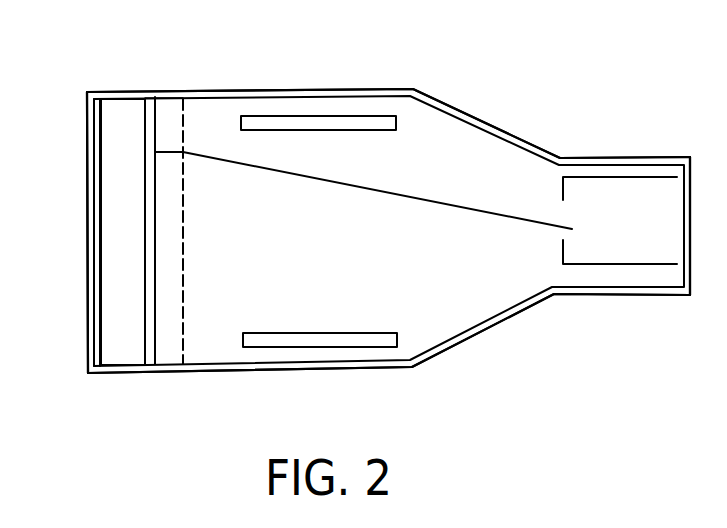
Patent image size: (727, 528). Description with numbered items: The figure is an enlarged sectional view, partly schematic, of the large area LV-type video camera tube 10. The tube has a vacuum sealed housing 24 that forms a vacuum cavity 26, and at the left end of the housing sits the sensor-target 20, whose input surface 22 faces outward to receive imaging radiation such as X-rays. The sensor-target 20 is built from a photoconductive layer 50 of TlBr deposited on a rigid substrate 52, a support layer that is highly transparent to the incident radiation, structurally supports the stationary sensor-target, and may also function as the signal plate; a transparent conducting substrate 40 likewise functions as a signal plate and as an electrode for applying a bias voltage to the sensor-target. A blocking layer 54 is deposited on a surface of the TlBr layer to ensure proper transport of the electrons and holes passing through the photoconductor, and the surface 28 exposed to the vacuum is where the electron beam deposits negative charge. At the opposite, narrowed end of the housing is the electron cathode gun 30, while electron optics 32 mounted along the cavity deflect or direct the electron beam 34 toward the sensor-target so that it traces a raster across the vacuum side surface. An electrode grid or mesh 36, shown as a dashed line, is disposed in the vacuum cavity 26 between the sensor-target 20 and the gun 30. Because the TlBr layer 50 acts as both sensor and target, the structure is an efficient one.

The LV-type tube 10 is at (292, 72).
The sensor-target 20 is at (108, 92).
The input surface 22 is at (88, 165).
The vacuum sealed housing 24 is at (477, 327).
The vacuum cavity 26 is at (363, 273).
The surface 28 is at (155, 123).
The electron cathode gun 30 is at (620, 177).
The electron optics 32 is at (342, 132).
The electron beam 34 is at (443, 200).
The electrode grid or mesh 36 is at (185, 255).
The transparent conducting substrate 40 is at (100, 233).
The photoconductive layer 50 is at (128, 350).
The rigid substrate 52 is at (100, 315).
The blocking layer 54 is at (153, 352).